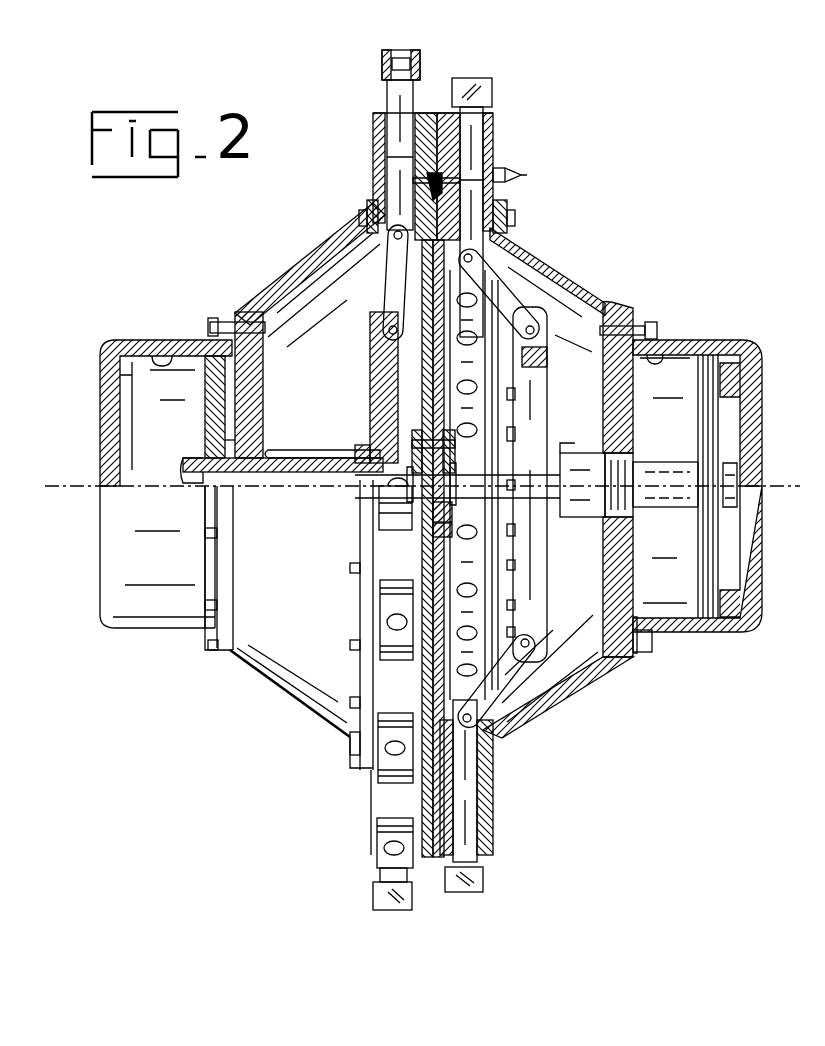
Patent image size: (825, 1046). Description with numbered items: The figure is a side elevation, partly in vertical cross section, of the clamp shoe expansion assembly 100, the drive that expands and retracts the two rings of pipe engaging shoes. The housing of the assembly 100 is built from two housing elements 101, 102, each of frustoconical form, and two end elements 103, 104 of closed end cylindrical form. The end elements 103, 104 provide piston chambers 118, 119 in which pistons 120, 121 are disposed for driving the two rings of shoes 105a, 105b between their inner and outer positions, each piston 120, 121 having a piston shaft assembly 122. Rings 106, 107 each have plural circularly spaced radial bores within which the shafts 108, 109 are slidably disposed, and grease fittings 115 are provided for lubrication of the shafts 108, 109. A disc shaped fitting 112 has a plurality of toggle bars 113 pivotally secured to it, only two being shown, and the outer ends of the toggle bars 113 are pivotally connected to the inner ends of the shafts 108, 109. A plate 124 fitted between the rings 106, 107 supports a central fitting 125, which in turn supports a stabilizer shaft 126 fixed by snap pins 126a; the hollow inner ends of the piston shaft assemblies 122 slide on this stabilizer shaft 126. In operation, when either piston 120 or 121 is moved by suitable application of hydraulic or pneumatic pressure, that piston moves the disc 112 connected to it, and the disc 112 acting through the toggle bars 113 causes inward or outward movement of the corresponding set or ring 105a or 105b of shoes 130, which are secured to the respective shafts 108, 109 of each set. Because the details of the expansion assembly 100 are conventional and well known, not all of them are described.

The clamp shoe expansion assembly 100 is at (610, 723).
The housing element 101 is at (300, 271).
The housing element 102 is at (572, 299).
The end element 103 is at (118, 340).
The end element 104 is at (722, 340).
The ring of shoes 105a is at (386, 933).
The ring of shoes 105b is at (464, 911).
The ring 106 is at (425, 113).
The ring 107 is at (442, 113).
The shaft 108 is at (386, 100).
The shaft 109 is at (483, 158).
The disc shaped fitting 112 is at (550, 330).
The toggle bar 113 is at (382, 258).
The grease fitting 115 is at (527, 177).
The chamber 118 is at (172, 350).
The chamber 119 is at (668, 352).
The piston 120 is at (205, 423).
The piston 121 is at (722, 438).
The piston shaft assembly 122 is at (307, 450).
The plate 124 is at (370, 363).
The central fitting 125 is at (410, 437).
The stabilizer shaft 126 is at (338, 458).
The snap pin 126a is at (460, 476).
The shoe 130 is at (381, 69).